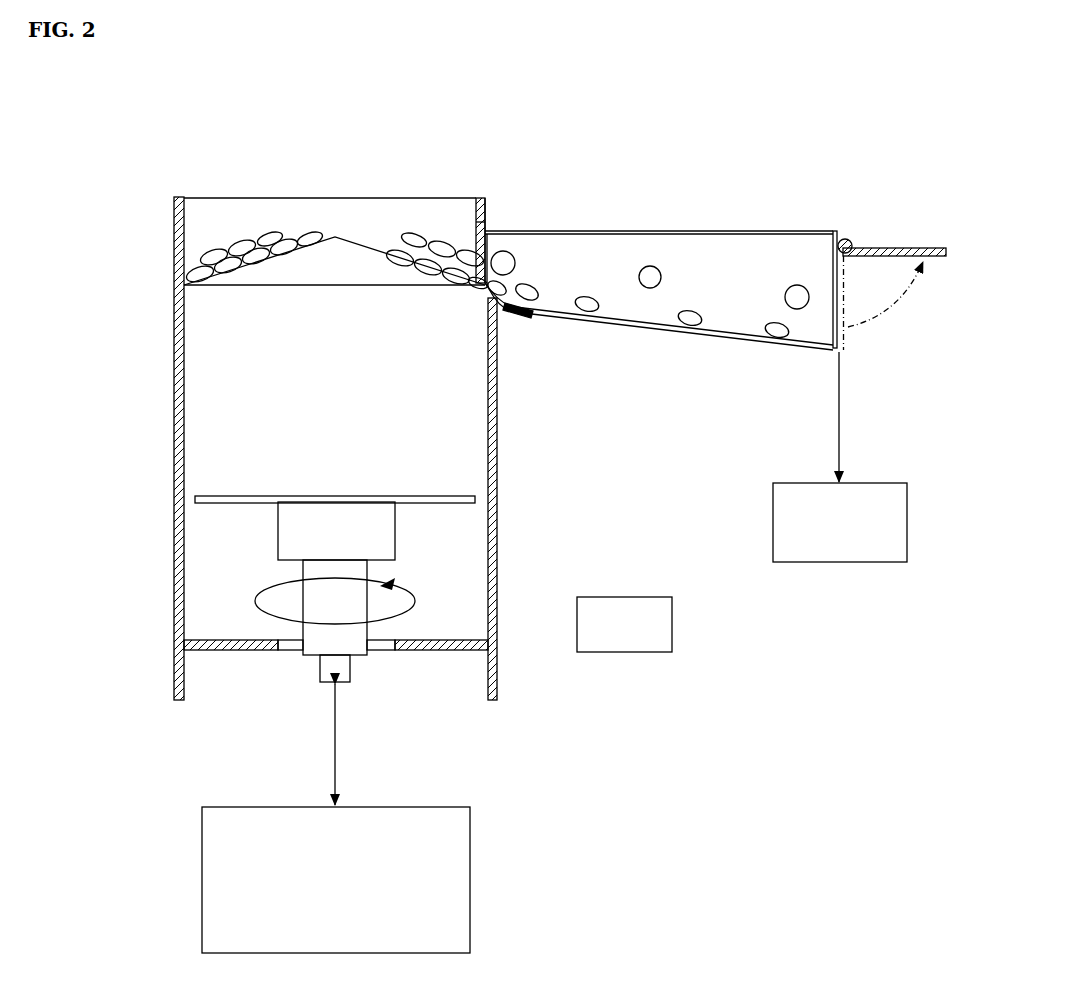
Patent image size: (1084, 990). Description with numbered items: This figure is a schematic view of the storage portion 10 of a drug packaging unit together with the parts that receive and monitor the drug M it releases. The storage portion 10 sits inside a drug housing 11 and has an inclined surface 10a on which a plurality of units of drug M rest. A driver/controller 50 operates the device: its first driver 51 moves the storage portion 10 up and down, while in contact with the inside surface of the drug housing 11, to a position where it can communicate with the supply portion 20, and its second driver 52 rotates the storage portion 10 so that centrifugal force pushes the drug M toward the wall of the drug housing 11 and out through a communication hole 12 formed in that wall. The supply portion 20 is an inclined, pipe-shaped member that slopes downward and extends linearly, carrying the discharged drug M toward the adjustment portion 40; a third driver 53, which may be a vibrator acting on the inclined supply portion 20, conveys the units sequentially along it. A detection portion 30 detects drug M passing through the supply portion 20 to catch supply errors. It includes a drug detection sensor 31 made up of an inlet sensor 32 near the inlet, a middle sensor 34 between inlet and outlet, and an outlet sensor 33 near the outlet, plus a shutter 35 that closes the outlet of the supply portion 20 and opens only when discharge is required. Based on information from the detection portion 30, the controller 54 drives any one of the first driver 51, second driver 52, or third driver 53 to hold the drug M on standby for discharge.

The storage portion 10 is at (321, 448).
The inclined surface 10a is at (298, 238).
The drug housing 11 is at (498, 465).
The communication hole 12 is at (483, 226).
The drug M is at (427, 240).
The supply portion 20 is at (700, 333).
The detection portion 30 is at (715, 228).
The drug detection sensor 31 is at (650, 208).
The inlet sensor 32 is at (511, 253).
The outlet sensor 33 is at (788, 287).
The middle sensor 34 is at (650, 265).
The shutter 35 is at (905, 249).
The adjustment portion 40 is at (868, 482).
The driver/controller 50 is at (504, 628).
The first driver 51 is at (472, 835).
The second driver 52 is at (353, 640).
The third driver 53 is at (522, 322).
The controller 54 is at (662, 613).